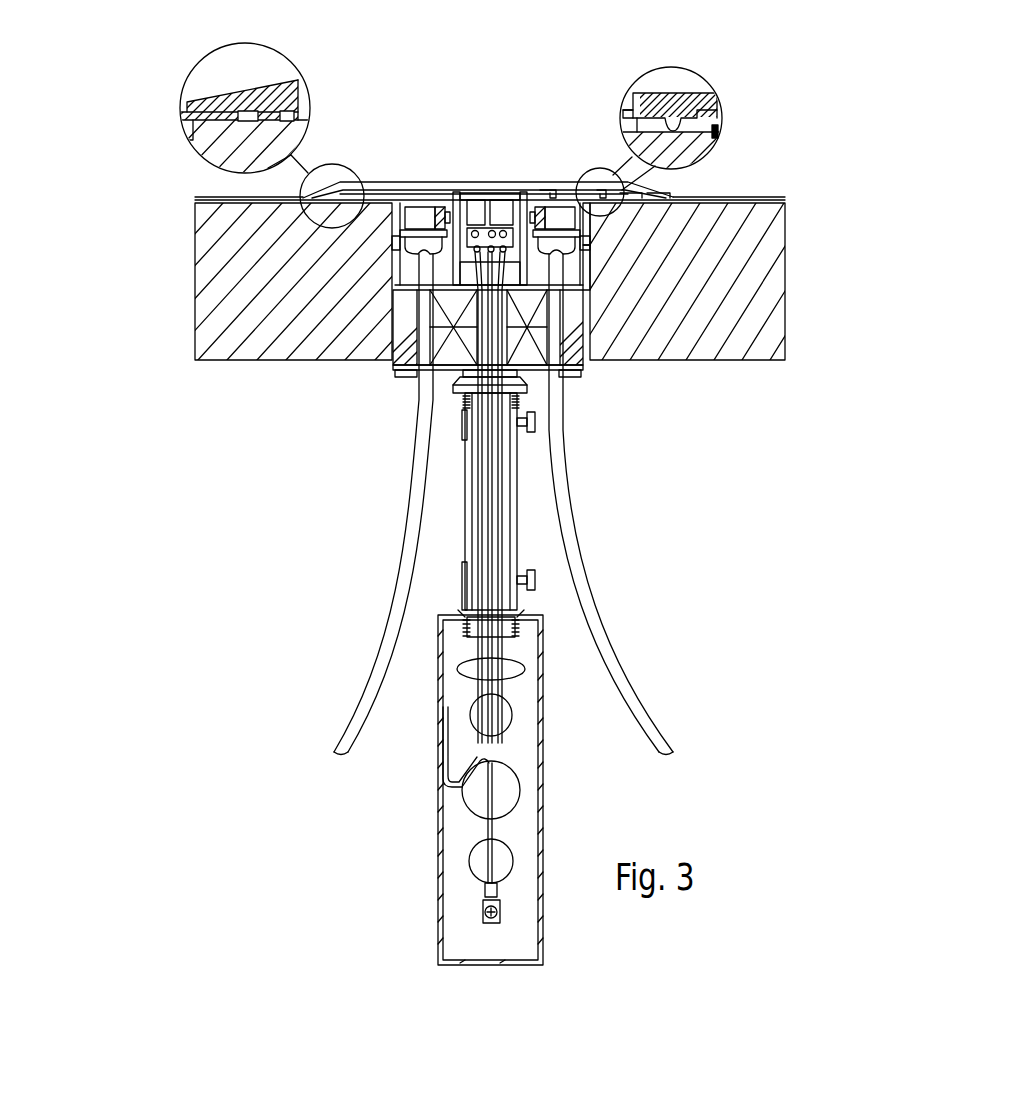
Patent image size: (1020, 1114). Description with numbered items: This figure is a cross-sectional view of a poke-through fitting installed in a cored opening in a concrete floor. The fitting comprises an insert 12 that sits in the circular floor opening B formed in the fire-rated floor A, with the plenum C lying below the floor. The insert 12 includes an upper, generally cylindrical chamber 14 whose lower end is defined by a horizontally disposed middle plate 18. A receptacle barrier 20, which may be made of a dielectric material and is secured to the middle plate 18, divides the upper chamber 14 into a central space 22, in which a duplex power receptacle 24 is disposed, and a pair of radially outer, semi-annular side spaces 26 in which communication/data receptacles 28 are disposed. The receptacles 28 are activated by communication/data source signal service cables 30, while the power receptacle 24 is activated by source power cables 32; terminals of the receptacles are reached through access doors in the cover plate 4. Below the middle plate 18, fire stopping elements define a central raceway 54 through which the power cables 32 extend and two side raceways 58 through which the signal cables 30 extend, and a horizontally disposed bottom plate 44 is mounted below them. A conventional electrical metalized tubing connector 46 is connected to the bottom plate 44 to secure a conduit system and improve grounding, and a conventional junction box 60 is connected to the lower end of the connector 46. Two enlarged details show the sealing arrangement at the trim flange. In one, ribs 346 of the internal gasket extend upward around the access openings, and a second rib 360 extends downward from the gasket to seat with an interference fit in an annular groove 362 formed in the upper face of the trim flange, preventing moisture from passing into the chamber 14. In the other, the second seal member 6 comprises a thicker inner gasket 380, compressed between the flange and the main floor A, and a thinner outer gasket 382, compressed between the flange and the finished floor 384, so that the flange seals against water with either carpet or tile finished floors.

The cover plate 4 is at (378, 182).
The second seal member 6 is at (235, 127).
The insert 12 is at (604, 324).
The upper chamber 14 is at (583, 232).
The middle plate 18 is at (592, 322).
The receptacle barrier 20 is at (585, 258).
The central space 22 is at (390, 320).
The power receptacle 24 is at (490, 205).
The side spaces 26 is at (390, 243).
The communication/data receptacles 28 is at (424, 210).
The communication/data source signal service cables 30 is at (392, 633).
The source power cables 32 is at (458, 670).
The bottom plate 44 is at (405, 372).
The electrical metalized tubing connector 46 is at (464, 470).
The central raceway 54 is at (447, 350).
The side raceways 58 is at (400, 369).
The junction box 60 is at (436, 870).
The ribs 346 is at (621, 113).
The second rib 360 is at (697, 98).
The annular groove 362 is at (721, 114).
The inner gasket 380 is at (273, 107).
The outer gasket 382 is at (245, 97).
The finished floor 384 is at (190, 130).
The floor A is at (193, 155).
The floor opening B is at (590, 348).
The plenum C is at (655, 483).